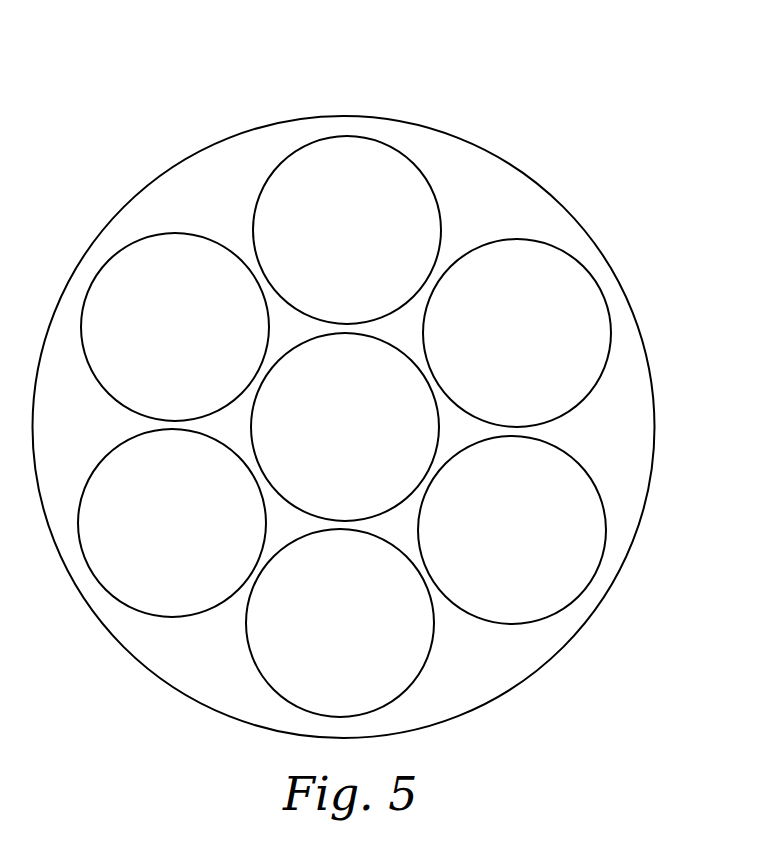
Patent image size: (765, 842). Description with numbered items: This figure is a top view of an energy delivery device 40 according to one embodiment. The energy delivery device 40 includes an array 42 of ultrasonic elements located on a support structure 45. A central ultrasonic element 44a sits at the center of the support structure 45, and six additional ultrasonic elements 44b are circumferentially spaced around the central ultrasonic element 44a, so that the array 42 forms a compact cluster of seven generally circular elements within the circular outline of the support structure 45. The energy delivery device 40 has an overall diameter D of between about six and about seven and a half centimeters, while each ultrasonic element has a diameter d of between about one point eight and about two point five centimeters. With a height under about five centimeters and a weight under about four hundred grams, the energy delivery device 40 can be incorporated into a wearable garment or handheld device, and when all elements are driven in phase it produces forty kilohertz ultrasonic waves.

The energy delivery device 40 is at (103, 88).
The array 42 is at (580, 573).
The central ultrasonic element 44a is at (330, 411).
The additional ultrasonic elements 44b is at (368, 242).
The support structure 45 is at (530, 172).
The diameter D is at (505, 163).
The diameter d is at (451, 399).